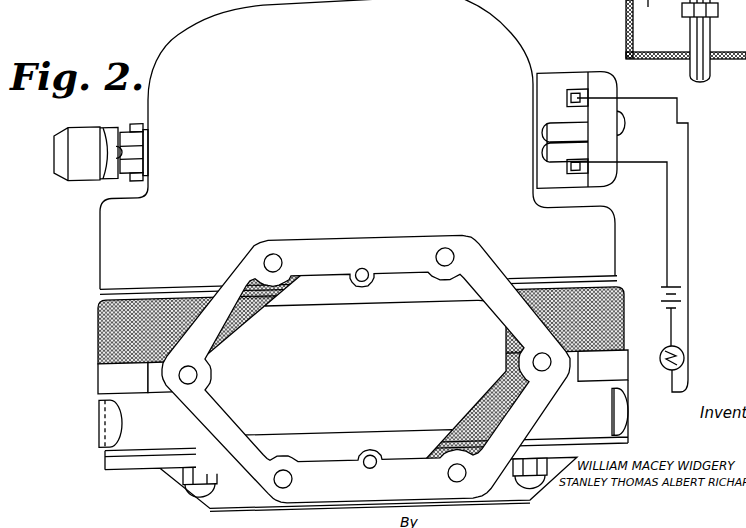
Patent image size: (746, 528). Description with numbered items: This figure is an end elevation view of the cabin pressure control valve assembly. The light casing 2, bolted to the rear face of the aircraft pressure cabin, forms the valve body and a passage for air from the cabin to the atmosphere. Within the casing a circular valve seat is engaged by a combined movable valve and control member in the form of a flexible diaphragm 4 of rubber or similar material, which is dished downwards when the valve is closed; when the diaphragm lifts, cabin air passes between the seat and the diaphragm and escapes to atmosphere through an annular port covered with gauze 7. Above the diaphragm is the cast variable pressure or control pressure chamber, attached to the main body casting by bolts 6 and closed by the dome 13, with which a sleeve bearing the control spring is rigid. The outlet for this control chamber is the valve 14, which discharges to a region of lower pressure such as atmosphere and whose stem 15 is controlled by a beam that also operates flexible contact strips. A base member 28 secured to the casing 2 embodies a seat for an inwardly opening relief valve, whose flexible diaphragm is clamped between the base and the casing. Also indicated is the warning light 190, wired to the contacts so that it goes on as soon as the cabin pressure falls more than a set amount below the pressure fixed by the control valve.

The dome 13 is at (498, 36).
The valve 14 is at (120, 174).
The flexible diaphragm 4 is at (160, 283).
The gauze 7 is at (98, 320).
The casing 2 is at (170, 426).
The bolts 6 is at (195, 484).
The base member 28 is at (555, 465).
The warning light 190 is at (684, 356).
The stem 15 is at (732, 66).